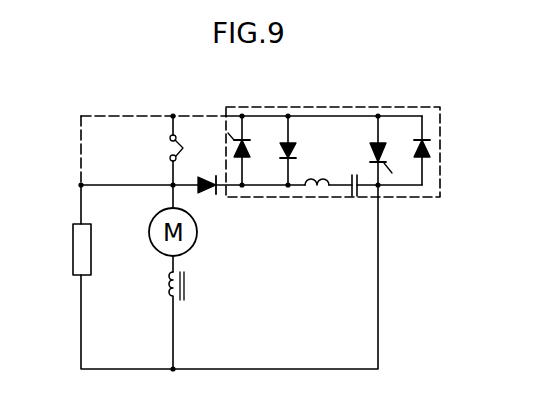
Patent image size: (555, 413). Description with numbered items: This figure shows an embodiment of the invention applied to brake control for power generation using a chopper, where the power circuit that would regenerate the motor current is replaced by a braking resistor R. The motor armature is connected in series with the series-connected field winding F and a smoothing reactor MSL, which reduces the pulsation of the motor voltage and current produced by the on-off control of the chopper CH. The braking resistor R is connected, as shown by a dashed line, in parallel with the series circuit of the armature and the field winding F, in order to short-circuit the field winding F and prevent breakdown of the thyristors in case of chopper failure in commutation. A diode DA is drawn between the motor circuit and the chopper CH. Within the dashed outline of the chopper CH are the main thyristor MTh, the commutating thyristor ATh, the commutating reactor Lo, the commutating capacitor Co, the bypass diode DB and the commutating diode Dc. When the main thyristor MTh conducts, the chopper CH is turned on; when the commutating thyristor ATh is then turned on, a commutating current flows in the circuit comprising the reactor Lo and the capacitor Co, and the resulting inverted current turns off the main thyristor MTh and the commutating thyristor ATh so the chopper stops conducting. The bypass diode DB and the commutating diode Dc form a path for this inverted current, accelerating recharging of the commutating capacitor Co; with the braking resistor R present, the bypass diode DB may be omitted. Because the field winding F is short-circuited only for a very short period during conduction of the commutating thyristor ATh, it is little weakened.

The chopper CH is at (351, 82).
The series-connected field winding F is at (167, 158).
The diode DA is at (216, 178).
The braking resistor R is at (70, 247).
The smoothing reactor MSL is at (186, 285).
The commutating thyristor ATh is at (248, 162).
The commutating diode Dc is at (280, 145).
The main thyristor MTh is at (368, 158).
The bypass diode DB is at (433, 148).
The commutating reactor Lo is at (317, 190).
The commutating capacitor Co is at (358, 195).